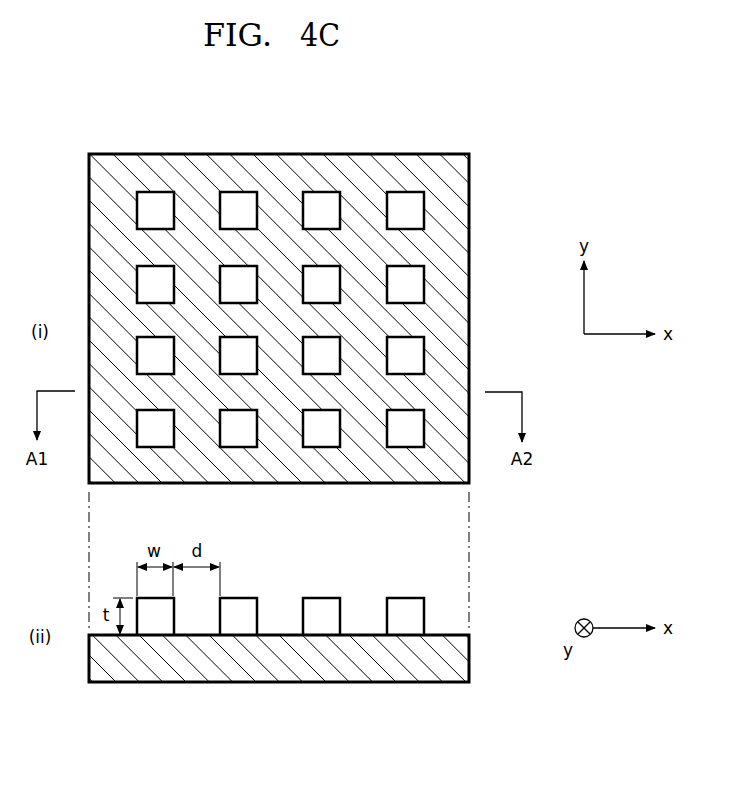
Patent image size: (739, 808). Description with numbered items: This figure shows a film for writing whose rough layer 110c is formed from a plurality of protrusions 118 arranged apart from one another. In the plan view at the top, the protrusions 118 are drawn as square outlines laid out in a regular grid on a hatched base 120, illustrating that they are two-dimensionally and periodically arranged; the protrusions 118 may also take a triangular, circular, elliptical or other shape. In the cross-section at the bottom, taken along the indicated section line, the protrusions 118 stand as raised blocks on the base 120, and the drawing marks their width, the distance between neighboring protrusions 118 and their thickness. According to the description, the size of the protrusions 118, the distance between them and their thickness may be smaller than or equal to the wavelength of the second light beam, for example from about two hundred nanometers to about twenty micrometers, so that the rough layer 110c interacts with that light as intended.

The rough layer 110c is at (300, 104).
The protrusions 118 is at (319, 206).
The substrate 120 is at (457, 235).